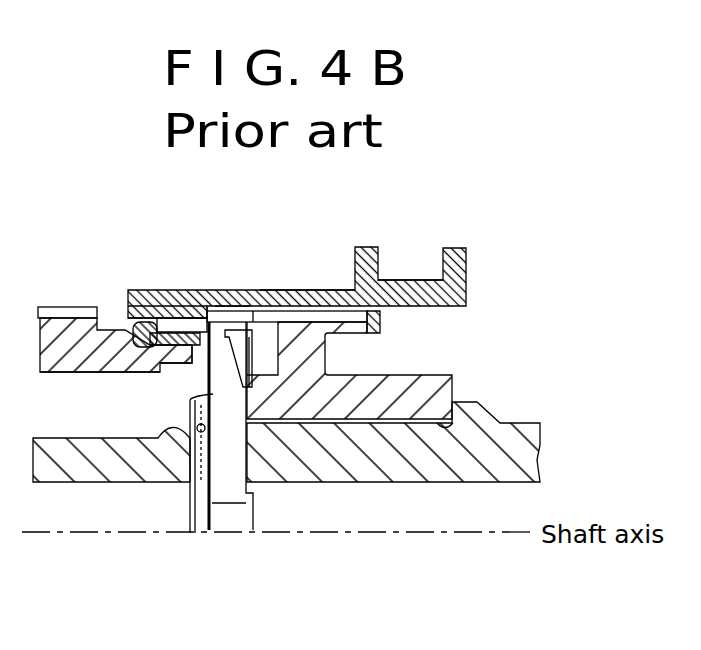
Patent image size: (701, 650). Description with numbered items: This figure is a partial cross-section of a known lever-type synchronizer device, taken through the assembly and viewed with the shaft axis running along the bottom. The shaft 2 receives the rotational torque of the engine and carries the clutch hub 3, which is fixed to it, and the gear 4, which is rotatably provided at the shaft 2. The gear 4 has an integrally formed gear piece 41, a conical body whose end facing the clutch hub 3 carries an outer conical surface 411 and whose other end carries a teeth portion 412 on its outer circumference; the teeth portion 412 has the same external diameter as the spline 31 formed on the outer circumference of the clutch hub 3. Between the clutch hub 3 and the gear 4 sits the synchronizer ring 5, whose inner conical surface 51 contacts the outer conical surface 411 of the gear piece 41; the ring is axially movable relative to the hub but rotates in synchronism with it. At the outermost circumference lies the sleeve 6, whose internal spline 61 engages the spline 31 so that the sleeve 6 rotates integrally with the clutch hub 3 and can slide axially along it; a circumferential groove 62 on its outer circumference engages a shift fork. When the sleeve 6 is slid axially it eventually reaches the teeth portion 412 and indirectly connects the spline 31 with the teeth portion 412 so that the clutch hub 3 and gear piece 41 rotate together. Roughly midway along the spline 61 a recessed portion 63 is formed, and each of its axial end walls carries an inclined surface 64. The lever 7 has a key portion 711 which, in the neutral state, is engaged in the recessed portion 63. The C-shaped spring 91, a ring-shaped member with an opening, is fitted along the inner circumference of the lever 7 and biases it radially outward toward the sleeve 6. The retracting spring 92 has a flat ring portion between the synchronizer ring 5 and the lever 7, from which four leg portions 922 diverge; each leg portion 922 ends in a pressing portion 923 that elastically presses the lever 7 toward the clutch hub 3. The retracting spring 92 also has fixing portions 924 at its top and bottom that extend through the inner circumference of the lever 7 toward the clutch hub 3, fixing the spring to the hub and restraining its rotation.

The shaft 2 is at (517, 403).
The clutch hub 3 is at (401, 375).
The spline 31 is at (381, 317).
The gear 4 is at (61, 374).
The gear piece 41 is at (101, 373).
The outer conical surface 411 is at (158, 364).
The teeth portion 412 is at (57, 307).
The synchronizer ring 5 is at (130, 325).
The inner conical surface 51 is at (147, 322).
The sleeve 6 is at (452, 248).
The spline 61 is at (307, 292).
The circumferential groove 62 is at (412, 280).
The recessed portion 63 is at (213, 290).
The inclined surface 64 is at (259, 318).
The lever 7 is at (252, 496).
The key portion 711 is at (230, 306).
The C-shaped spring 91 is at (224, 514).
The retracting spring 92 is at (186, 505).
The leg portion 922 is at (188, 482).
The pressing portion 923 is at (120, 483).
The fixing portion 924 is at (268, 340).